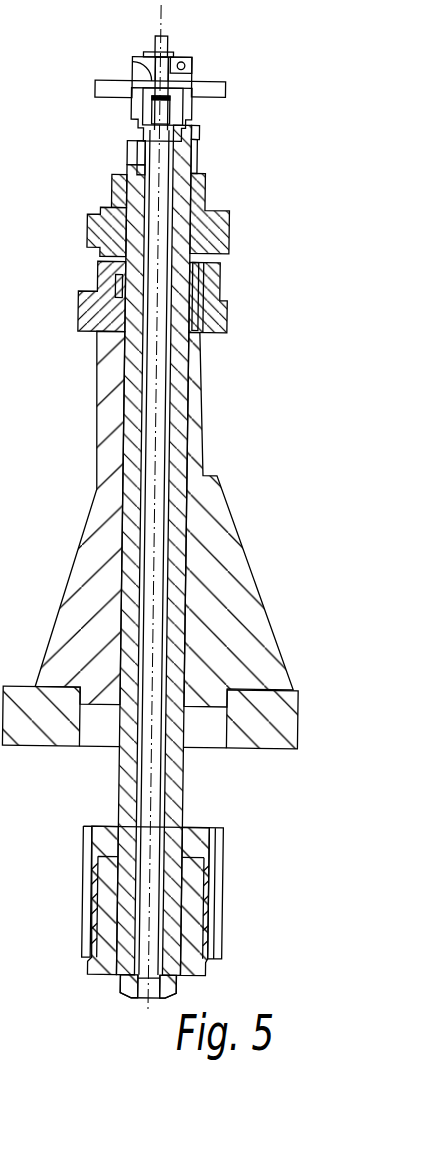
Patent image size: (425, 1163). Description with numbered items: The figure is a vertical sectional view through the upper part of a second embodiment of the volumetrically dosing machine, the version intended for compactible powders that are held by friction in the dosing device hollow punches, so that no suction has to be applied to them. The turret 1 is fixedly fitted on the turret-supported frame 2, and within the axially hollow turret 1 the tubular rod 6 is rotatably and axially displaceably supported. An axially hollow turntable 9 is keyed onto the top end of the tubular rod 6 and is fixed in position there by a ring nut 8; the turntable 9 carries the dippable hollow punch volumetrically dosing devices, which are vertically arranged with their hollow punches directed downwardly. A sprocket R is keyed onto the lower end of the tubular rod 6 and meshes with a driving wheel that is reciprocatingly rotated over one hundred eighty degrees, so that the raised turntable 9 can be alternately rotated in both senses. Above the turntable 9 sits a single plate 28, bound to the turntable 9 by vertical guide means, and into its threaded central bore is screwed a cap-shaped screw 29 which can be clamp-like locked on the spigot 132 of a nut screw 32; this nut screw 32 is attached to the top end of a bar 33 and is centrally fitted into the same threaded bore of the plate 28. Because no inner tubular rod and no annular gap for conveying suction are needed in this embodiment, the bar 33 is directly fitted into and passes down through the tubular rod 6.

The turret 1 is at (95, 449).
The turret-supported frame 2 is at (17, 690).
The tubular rod 6 is at (178, 427).
The ring nut 8 is at (108, 158).
The turntable 9 is at (224, 229).
The plate 28 is at (207, 89).
The cap-shaped screw 29 is at (124, 77).
The nut screw 32 is at (168, 106).
The bar 33 is at (158, 163).
The spigot 132 is at (161, 59).
The sprocket R is at (227, 866).